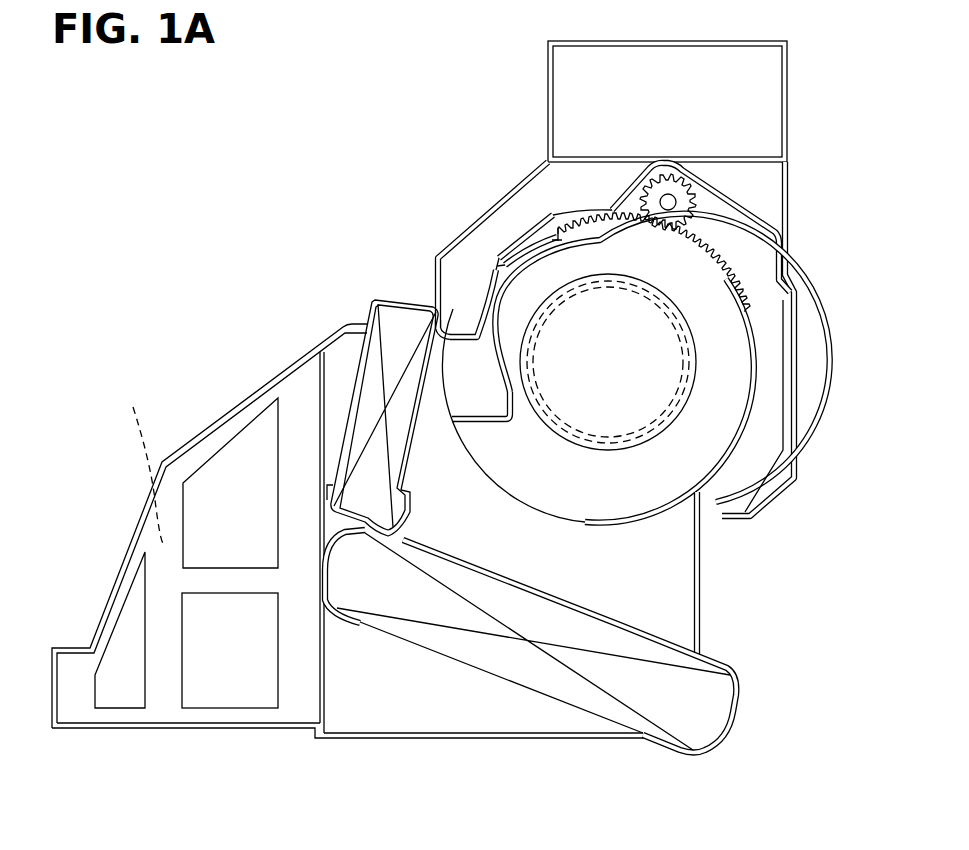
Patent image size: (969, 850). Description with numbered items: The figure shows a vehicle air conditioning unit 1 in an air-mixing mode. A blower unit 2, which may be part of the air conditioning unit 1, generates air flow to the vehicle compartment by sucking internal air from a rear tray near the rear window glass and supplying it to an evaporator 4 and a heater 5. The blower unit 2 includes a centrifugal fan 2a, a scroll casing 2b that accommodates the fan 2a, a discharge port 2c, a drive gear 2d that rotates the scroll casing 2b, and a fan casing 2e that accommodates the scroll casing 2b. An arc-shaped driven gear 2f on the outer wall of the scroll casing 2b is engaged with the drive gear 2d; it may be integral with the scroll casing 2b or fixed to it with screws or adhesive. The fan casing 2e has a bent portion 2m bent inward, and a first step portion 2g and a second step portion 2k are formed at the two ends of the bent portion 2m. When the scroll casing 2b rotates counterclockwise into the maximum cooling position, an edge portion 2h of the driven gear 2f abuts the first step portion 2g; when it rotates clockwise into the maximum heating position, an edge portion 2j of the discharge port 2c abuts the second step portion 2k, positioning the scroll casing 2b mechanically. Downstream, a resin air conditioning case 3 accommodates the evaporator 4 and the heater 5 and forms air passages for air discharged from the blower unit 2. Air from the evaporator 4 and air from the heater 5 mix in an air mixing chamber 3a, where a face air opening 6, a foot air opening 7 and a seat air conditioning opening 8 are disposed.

The air conditioning unit 1 is at (793, 66).
The blower unit 2 is at (770, 307).
The fan 2a is at (690, 393).
The scroll casing 2b is at (730, 458).
The discharge port 2c is at (560, 505).
The drive gear 2d is at (676, 200).
The fan casing 2e is at (484, 264).
The driven gear 2f is at (720, 258).
The first step portion 2g is at (493, 262).
The edge portion 2h is at (557, 238).
The edge portion 2j is at (393, 353).
The second step portion 2k is at (463, 415).
The bent portion 2m is at (446, 325).
The air conditioning case 3 is at (333, 337).
The air mixing chamber 3a is at (142, 462).
The evaporator 4 is at (697, 693).
The heater 5 is at (372, 330).
The face air opening 6 is at (237, 680).
The foot air opening 7 is at (226, 477).
The seat air conditioning opening 8 is at (120, 678).